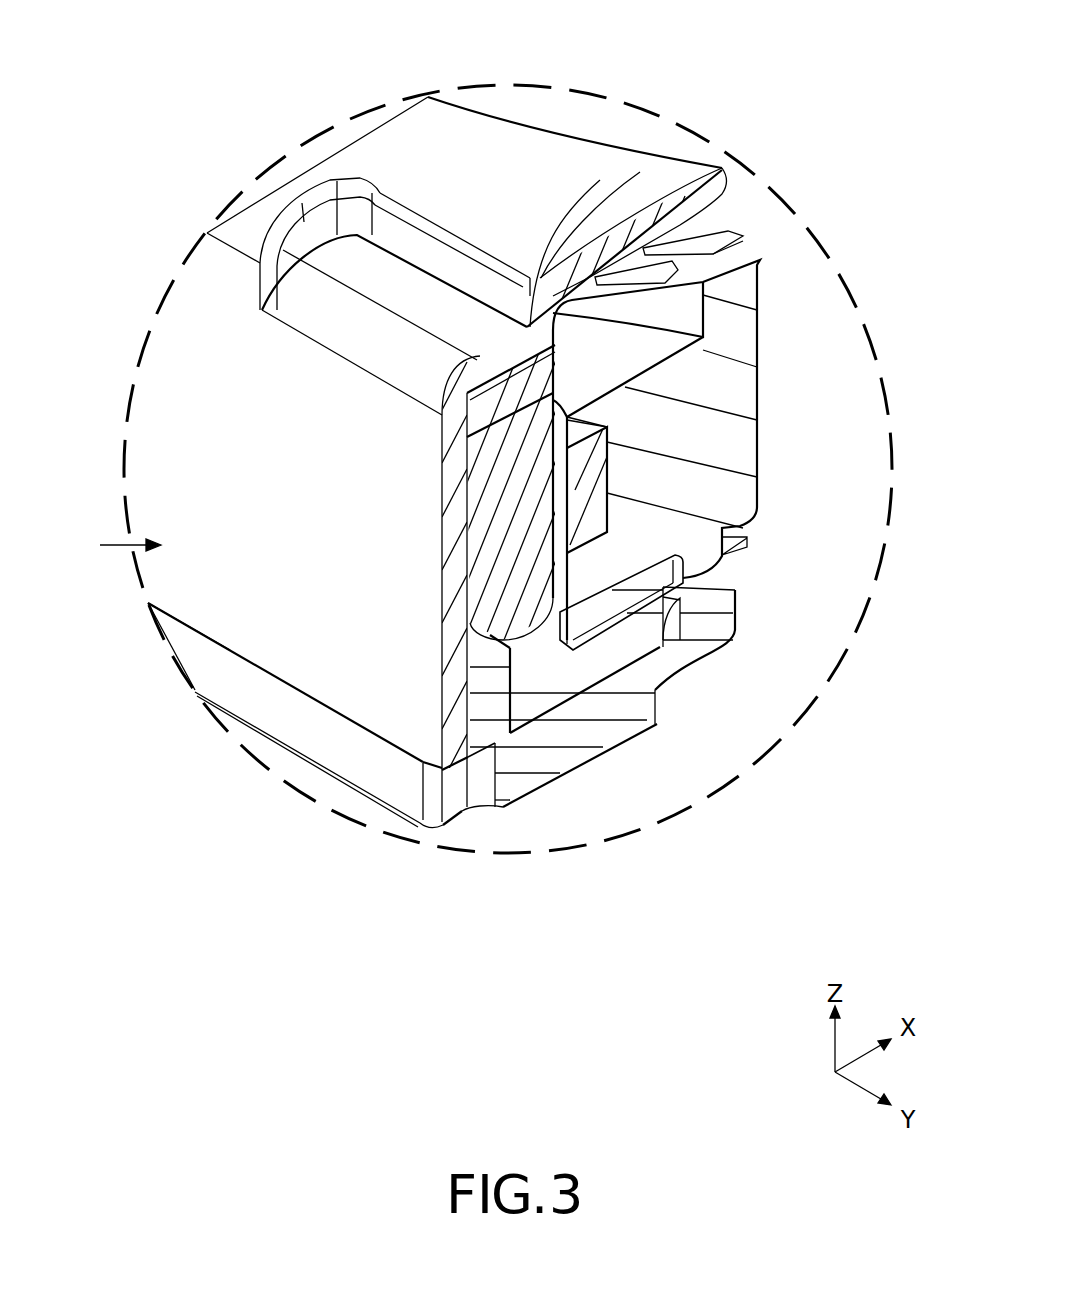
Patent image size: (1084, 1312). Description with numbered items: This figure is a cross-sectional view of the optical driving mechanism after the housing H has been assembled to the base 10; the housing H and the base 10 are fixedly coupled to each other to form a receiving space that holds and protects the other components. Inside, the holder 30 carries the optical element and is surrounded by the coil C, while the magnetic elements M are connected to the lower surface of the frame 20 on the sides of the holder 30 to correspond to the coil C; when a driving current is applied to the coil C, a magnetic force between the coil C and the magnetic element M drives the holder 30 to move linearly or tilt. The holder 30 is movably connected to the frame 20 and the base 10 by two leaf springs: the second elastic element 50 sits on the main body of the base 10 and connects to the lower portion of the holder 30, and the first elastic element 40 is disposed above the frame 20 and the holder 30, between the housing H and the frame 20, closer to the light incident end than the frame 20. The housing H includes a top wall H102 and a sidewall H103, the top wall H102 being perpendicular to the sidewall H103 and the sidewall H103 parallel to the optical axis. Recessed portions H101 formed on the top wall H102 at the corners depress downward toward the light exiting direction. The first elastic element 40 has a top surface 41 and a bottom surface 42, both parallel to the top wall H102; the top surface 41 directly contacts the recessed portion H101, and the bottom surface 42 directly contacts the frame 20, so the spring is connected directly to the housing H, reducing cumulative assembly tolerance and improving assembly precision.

The base 10 is at (193, 663).
The frame 20 is at (485, 413).
The holder 30 is at (745, 333).
The first elastic element 40 is at (490, 370).
The top surface 41 is at (722, 168).
The bottom surface 42 is at (607, 438).
The second elastic element 50 is at (605, 622).
The coil C is at (592, 480).
The magnetic element M is at (387, 525).
The housing H is at (115, 547).
The recessed portion H101 is at (363, 260).
The top wall H102 is at (524, 165).
The sidewall H103 is at (253, 583).